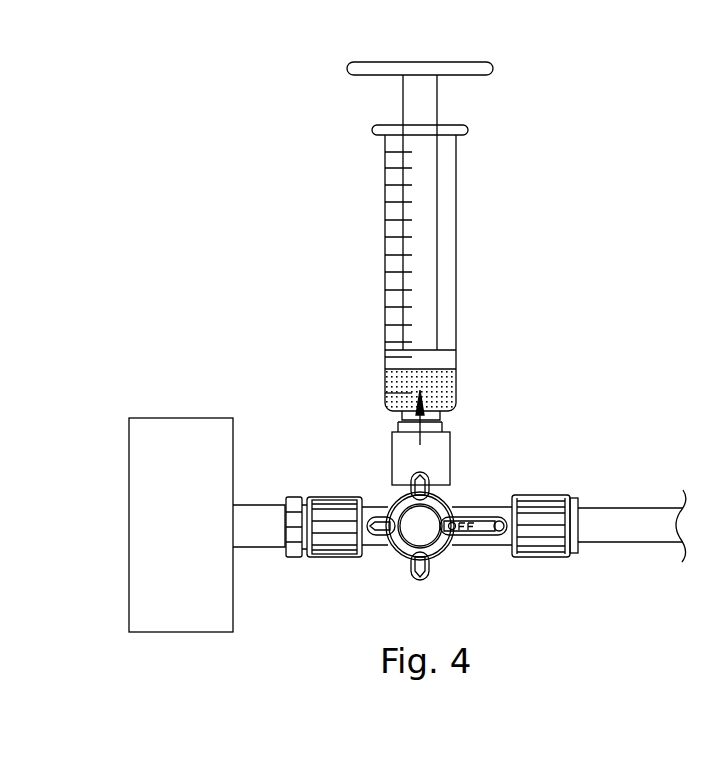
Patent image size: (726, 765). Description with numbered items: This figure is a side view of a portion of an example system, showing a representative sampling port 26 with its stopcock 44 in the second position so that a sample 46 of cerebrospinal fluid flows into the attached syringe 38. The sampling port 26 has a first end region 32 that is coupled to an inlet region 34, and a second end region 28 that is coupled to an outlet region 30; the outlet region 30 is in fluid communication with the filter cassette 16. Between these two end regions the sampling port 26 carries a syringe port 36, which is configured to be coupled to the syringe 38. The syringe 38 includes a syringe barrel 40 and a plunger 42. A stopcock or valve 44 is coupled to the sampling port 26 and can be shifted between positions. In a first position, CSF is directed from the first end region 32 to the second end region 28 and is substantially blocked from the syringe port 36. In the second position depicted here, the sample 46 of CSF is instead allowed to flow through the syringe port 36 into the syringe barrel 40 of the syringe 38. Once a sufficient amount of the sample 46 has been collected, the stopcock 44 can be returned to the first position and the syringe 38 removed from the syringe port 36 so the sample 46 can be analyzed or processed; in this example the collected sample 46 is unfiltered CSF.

The filter cassette 16 is at (129, 520).
The sampling port 26 is at (533, 463).
The second end region 28 is at (338, 497).
The outlet region 30 is at (258, 505).
The first end region 32 is at (542, 557).
The inlet region 34 is at (633, 508).
The syringe port 36 is at (392, 458).
The syringe 38 is at (459, 212).
The syringe barrel 40 is at (456, 185).
The plunger 42 is at (420, 62).
The stopcock 44 is at (500, 534).
The sample 46 is at (440, 393).